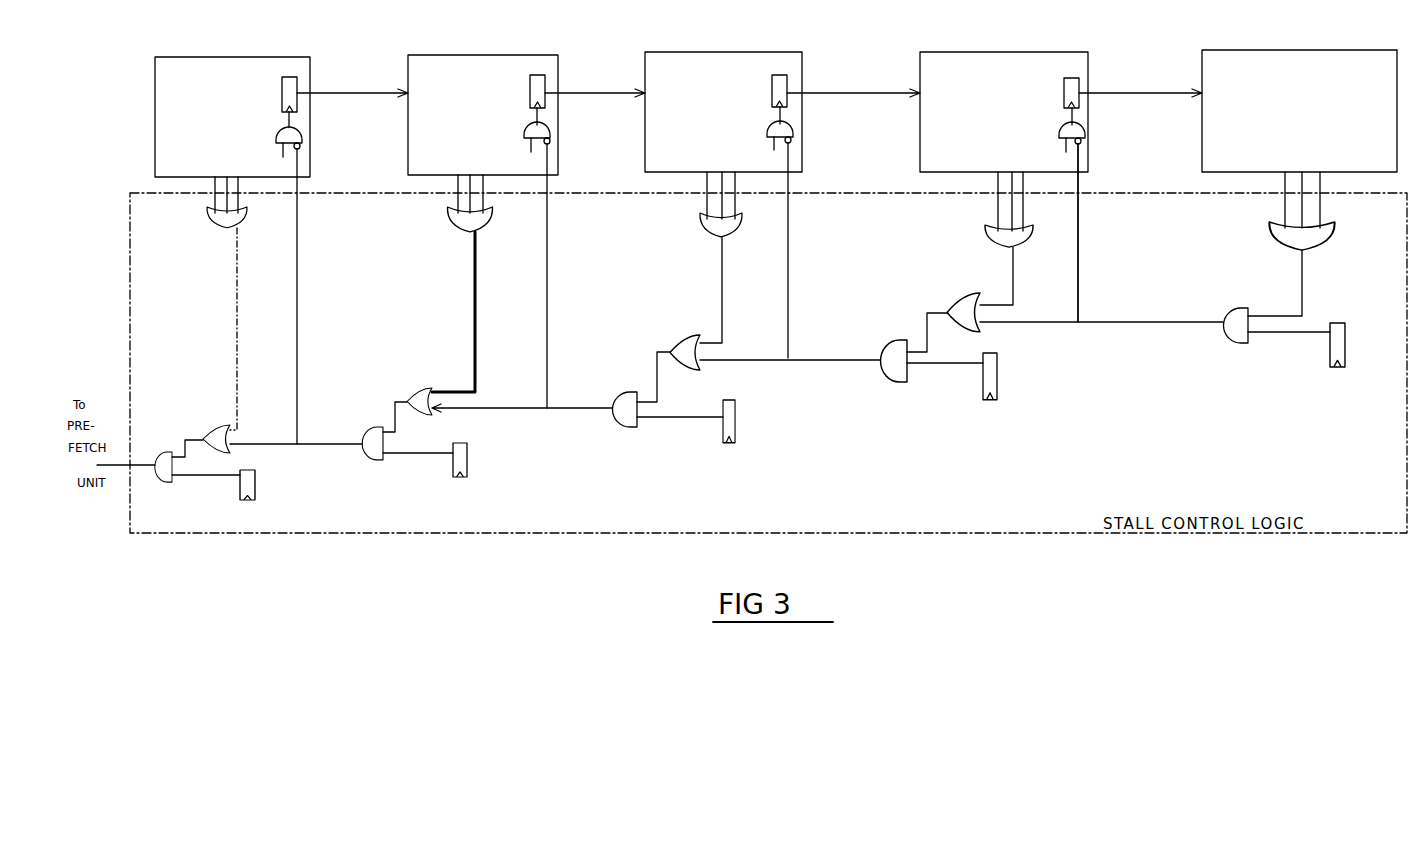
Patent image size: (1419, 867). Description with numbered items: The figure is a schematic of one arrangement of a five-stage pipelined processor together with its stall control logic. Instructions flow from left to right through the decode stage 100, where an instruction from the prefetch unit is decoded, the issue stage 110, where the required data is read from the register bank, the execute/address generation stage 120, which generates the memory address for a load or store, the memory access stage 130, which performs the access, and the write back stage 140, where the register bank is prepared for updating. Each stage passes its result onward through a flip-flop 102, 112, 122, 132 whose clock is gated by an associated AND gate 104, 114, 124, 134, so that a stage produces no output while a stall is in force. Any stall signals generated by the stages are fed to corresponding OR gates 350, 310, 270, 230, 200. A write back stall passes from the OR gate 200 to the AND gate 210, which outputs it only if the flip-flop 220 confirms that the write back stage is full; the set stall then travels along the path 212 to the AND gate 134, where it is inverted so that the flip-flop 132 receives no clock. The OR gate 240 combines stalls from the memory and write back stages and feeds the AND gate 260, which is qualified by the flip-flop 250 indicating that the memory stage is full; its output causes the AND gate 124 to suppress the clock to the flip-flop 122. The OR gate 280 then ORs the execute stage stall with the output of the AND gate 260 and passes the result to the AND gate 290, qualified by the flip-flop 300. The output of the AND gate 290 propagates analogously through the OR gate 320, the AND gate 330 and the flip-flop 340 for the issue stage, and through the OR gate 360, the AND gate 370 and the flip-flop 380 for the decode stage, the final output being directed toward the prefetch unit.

The decode stage 100 is at (228, 57).
The issue stage 110 is at (473, 55).
The execute/address generation stage 120 is at (719, 52).
The memory access stage 130 is at (1007, 52).
The write back stage 140 is at (1285, 50).
The flip-flop 102 is at (282, 92).
The AND gate 104 is at (276, 131).
The flip-flop 112 is at (530, 90).
The AND gate 114 is at (524, 128).
The flip-flop 122 is at (772, 88).
The AND gate 124 is at (770, 127).
The flip-flop 132 is at (1064, 92).
The AND gate 134 is at (1060, 128).
The OR gate 200 is at (1326, 243).
The AND gate 210 is at (1235, 308).
The path 212 is at (1078, 280).
The flip-flop 220 is at (1342, 325).
The OR gate 230 is at (1019, 244).
The OR gate 240 is at (958, 293).
The flip-flop 250 is at (998, 376).
The AND gate 260 is at (893, 340).
The OR gate 270 is at (731, 235).
The OR gate 280 is at (683, 335).
The AND gate 290 is at (622, 392).
The flip-flop 300 is at (736, 411).
The OR gate 310 is at (488, 222).
The OR gate 320 is at (413, 388).
The AND gate 330 is at (365, 430).
The flip-flop 340 is at (470, 474).
The OR gate 350 is at (243, 216).
The OR gate 360 is at (208, 425).
The AND gate 370 is at (157, 452).
The flip-flop 380 is at (256, 478).